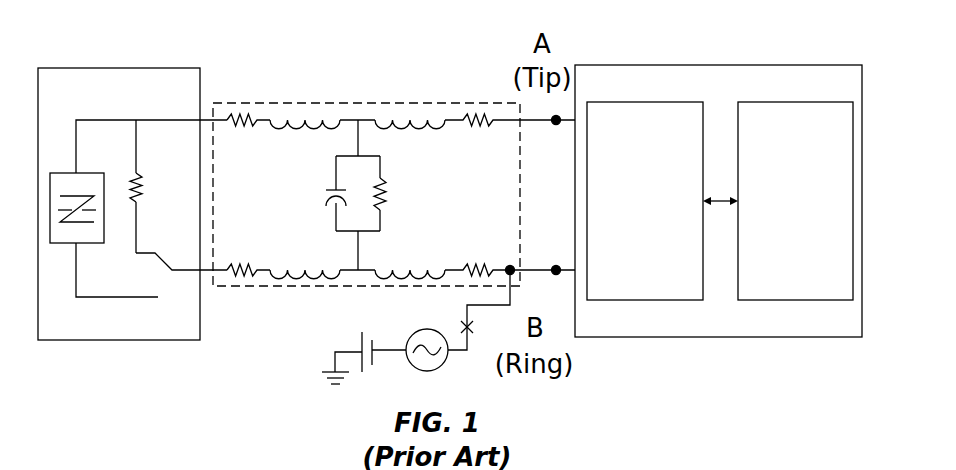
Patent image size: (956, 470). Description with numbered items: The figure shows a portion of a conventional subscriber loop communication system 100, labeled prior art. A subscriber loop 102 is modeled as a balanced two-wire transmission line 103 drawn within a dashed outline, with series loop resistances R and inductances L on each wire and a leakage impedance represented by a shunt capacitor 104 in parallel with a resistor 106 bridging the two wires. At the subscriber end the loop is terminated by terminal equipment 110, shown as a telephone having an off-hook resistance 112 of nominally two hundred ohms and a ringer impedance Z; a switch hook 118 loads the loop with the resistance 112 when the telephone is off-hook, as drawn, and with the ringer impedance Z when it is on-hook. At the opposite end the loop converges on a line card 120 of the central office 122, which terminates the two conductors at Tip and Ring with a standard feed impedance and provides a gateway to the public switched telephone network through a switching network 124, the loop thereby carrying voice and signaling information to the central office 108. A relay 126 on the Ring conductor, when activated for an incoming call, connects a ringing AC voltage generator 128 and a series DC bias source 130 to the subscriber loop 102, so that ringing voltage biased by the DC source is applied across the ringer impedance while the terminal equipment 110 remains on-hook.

The subscriber loop communication system 100 is at (756, 28).
The subscriber loop 102 is at (267, 385).
The balanced two-wire transmission line 103 is at (394, 211).
The capacitor 104 is at (325, 192).
The resistor 106 is at (417, 193).
The central office 108 is at (749, 201).
The terminal equipment 110 is at (132, 233).
The off-hook resistance 112 is at (140, 200).
The switch hook 118 is at (162, 274).
The line card 120 is at (664, 292).
The central office 122 is at (739, 365).
The switching network 124 is at (819, 292).
The relay 126 is at (459, 310).
The AC voltage generator 128 is at (399, 336).
The DC bias source 130 is at (336, 353).